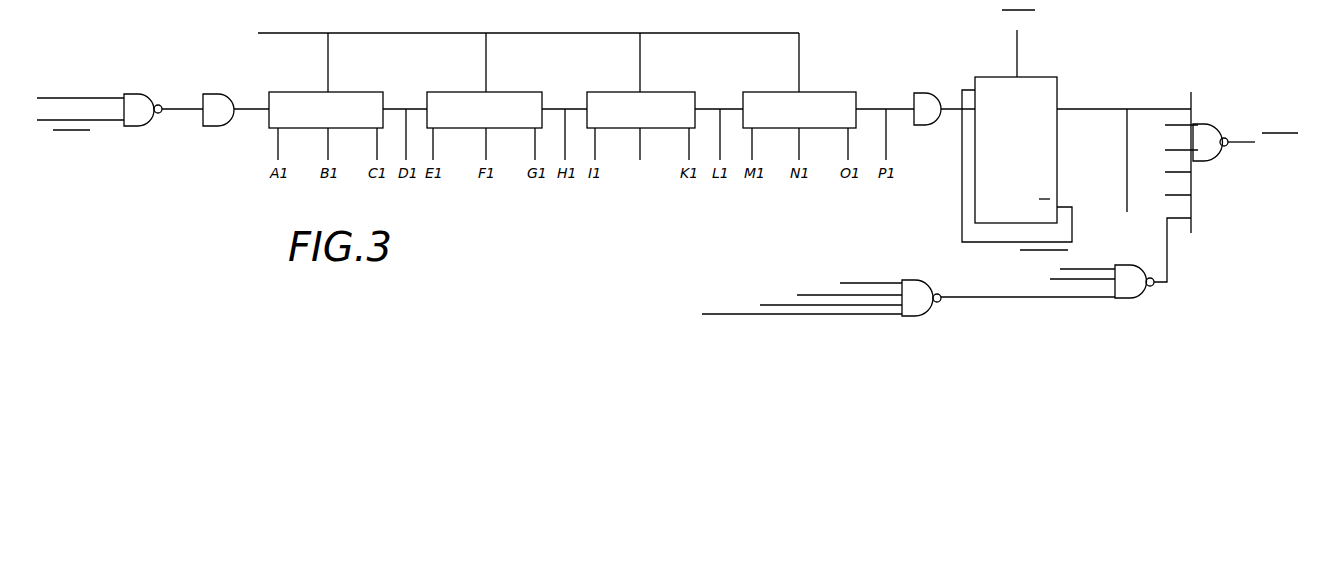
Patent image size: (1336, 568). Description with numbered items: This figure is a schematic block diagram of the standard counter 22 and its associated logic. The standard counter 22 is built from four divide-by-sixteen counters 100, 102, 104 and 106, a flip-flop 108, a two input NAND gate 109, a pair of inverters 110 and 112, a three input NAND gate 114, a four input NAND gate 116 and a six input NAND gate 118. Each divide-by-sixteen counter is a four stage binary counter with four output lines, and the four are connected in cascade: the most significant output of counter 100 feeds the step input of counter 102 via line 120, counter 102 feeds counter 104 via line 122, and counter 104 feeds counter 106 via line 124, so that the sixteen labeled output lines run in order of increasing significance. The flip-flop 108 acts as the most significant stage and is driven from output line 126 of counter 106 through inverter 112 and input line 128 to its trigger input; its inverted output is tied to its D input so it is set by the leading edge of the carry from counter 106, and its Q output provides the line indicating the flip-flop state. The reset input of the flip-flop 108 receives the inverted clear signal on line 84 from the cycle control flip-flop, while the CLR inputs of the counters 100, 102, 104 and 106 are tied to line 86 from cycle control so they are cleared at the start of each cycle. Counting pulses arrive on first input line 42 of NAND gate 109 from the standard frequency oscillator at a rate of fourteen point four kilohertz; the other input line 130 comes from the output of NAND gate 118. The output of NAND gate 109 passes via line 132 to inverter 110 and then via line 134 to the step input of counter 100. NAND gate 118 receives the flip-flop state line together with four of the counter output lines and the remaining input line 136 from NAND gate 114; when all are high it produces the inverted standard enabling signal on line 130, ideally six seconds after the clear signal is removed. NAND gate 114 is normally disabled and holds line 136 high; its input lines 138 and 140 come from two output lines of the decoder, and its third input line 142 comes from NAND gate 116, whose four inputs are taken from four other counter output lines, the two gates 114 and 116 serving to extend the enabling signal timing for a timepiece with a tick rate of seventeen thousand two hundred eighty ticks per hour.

The standard counter 22 is at (642, 192).
The first input line 42 is at (115, 97).
The CLR-bar input line 84 is at (1017, 38).
The line 86 is at (288, 33).
The divide by sixteen counter 100 is at (366, 92).
The divide by sixteen counter 102 is at (520, 92).
The divide by sixteen counter 104 is at (662, 92).
The divide by sixteen counter 106 is at (830, 92).
The flip-flop 108 is at (1058, 90).
The two input NAND gate 109 is at (144, 126).
The inverter 110 is at (226, 96).
The inverter 112 is at (932, 94).
The three input NAND gate 114 is at (1132, 289).
The four input NAND gate 116 is at (925, 286).
The six input NAND gate 118 is at (1212, 157).
The line 120 is at (400, 108).
The line 122 is at (575, 108).
The line 124 is at (715, 108).
The output line 126 is at (870, 108).
The input line 128 is at (942, 120).
The input line 130 is at (112, 120).
The line 132 is at (175, 108).
The line 134 is at (245, 126).
The input line 136 is at (1167, 232).
The input line 138 is at (1093, 269).
The input line 140 is at (1065, 285).
The input line 142 is at (1097, 297).